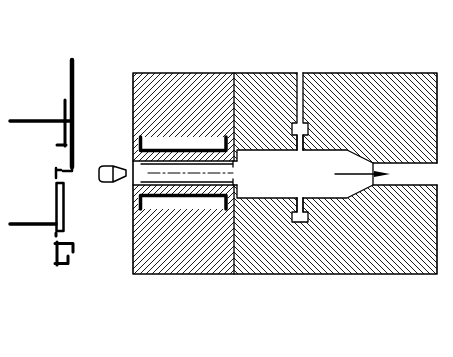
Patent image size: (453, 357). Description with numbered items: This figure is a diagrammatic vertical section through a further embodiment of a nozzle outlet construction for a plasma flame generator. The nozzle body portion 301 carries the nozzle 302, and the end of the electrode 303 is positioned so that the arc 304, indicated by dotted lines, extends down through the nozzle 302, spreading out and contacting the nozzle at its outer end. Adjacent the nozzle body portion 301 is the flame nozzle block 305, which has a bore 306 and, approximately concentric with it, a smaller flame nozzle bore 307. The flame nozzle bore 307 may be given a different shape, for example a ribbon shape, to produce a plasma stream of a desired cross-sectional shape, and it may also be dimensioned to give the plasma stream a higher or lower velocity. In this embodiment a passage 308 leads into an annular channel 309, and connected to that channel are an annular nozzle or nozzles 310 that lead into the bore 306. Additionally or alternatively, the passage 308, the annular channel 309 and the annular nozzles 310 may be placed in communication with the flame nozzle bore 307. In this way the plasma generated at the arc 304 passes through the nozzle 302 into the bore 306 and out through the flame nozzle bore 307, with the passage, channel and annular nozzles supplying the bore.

The nozzle body portion 301 is at (209, 262).
The nozzle 302 is at (140, 181).
The electrode end 303 is at (104, 183).
The arc 304 is at (143, 166).
The flame nozzle block 305 is at (391, 257).
The bore 306 is at (270, 155).
The flame nozzle bore 307 is at (410, 181).
The passage 308 is at (300, 95).
The annular channel 309 is at (302, 223).
The annular nozzles 310 is at (310, 159).